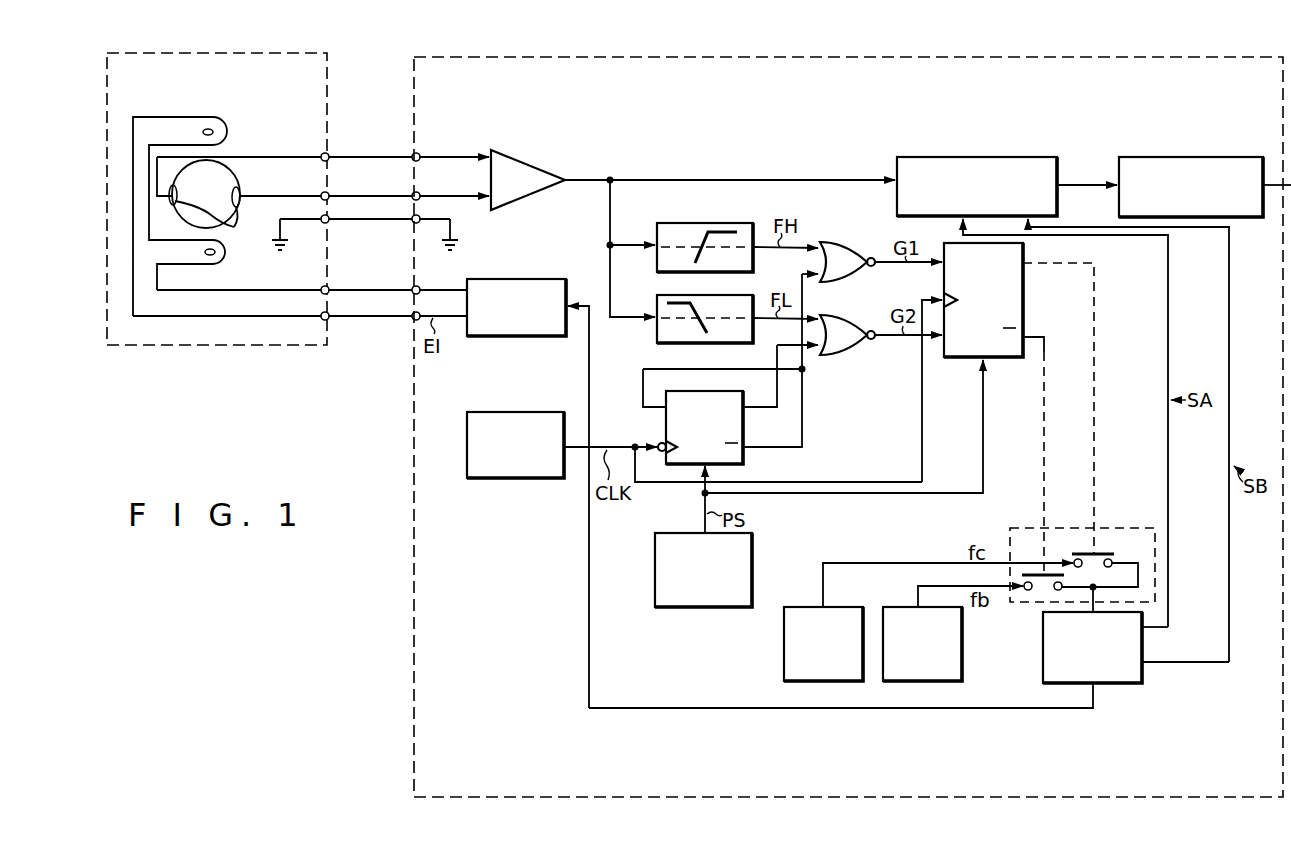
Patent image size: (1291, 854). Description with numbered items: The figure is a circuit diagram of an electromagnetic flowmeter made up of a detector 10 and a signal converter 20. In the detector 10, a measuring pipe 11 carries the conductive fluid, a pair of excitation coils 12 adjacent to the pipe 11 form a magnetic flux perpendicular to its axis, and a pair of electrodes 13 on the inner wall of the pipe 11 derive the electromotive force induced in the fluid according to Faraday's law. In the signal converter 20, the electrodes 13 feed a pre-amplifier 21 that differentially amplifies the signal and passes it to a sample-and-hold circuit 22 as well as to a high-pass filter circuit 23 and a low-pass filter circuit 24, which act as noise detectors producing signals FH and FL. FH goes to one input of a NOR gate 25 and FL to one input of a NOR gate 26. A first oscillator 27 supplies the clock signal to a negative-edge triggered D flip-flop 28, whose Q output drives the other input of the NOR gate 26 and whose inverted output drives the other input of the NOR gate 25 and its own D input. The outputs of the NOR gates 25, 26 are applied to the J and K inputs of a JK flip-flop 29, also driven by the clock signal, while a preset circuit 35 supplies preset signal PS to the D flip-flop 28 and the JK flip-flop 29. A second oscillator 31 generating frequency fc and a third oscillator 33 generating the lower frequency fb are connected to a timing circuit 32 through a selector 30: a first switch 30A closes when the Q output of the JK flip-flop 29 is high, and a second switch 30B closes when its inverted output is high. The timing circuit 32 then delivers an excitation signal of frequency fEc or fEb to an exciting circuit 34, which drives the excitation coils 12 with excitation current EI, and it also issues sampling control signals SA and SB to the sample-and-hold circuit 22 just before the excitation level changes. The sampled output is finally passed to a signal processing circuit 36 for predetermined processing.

The detector 10 is at (193, 93).
The measuring pipe 11 is at (232, 170).
The excitation coils 12 is at (220, 131).
The electrodes 13 is at (229, 222).
The signal converter 20 is at (778, 100).
The pre-amplifier 21 is at (524, 163).
The sample-and-hold circuit 22 is at (1033, 157).
The high-pass filter circuit 23 is at (718, 223).
The low-pass filter circuit 24 is at (657, 297).
The NOR gate 25 is at (848, 246).
The NOR gate 26 is at (846, 320).
The first oscillator 27 is at (547, 478).
The D-type flip-flop 28 is at (743, 381).
The JK flip-flop 29 is at (1024, 294).
The selector 30 is at (1072, 567).
The first switch 30A is at (1098, 553).
The second switch 30B is at (1038, 592).
The second oscillator 31 is at (812, 607).
The timing circuit 32 is at (1127, 683).
The third oscillator 33 is at (903, 607).
The exciting circuit 34 is at (540, 336).
The preset circuit 35 is at (732, 607).
The signal processing circuit 36 is at (1238, 157).